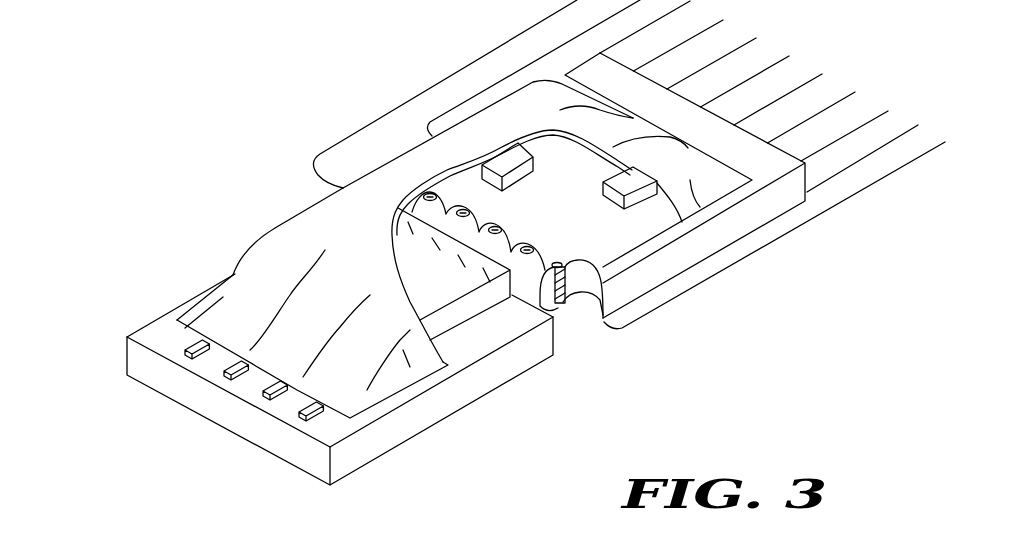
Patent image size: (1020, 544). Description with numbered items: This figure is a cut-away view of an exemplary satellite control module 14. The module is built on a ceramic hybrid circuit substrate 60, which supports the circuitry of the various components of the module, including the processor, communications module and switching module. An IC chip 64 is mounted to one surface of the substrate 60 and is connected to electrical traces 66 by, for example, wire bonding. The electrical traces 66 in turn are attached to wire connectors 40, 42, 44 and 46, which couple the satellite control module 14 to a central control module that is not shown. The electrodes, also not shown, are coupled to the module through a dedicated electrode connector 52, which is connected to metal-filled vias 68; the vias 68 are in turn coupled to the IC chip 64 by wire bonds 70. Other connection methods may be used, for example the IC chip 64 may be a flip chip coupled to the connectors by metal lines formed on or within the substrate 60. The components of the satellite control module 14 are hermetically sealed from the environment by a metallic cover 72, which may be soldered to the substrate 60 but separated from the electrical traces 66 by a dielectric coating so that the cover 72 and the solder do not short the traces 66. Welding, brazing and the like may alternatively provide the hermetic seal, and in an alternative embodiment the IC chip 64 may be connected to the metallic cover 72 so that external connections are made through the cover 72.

The satellite control module 14 is at (910, 195).
The wire connector 40 is at (168, 490).
The wire connector 42 is at (130, 472).
The wire connector 44 is at (92, 452).
The wire connector 46 is at (52, 432).
The dedicated electrode connector 52 is at (788, 233).
The ceramic hybrid circuit substrate 60 is at (430, 412).
The IC chip 64 is at (475, 308).
The electrical traces 66 is at (182, 317).
The metal-filled vias 68 is at (498, 227).
The wire bonds 70 is at (557, 264).
The metallic cover 72 is at (311, 224).